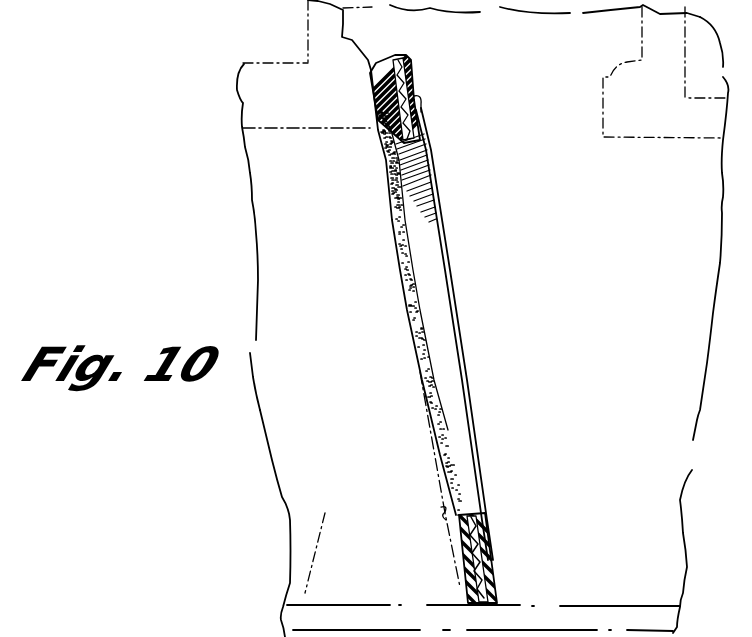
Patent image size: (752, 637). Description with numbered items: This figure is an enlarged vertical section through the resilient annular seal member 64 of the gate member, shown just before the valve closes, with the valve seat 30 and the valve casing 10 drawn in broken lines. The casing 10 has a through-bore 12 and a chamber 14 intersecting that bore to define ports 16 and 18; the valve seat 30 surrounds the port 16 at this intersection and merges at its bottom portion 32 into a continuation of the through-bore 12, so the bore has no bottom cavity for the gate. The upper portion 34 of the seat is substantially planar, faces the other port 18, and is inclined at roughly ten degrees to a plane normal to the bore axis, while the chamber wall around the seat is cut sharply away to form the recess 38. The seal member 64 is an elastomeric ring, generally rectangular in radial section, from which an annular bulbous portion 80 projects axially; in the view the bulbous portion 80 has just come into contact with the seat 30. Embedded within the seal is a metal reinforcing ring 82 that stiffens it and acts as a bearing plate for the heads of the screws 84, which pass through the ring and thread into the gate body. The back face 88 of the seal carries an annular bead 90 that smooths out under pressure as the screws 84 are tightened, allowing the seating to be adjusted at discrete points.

The valve casing 10 is at (292, 59).
The through-bore 12 is at (299, 523).
The chamber 14 is at (597, 52).
The port 16 is at (385, 364).
The port 18 is at (622, 310).
The valve seat 30 is at (437, 522).
The bottom portion 32 is at (460, 588).
The upper portion 34 is at (372, 97).
The recess 38 is at (378, 28).
The annular resilient seal member 64 is at (405, 60).
The bulbous portion 80 is at (370, 133).
The reinforcing ring 82 is at (478, 527).
The screws 84 is at (116, 6).
The back face 88 is at (413, 77).
The annular bead 90 is at (495, 560).